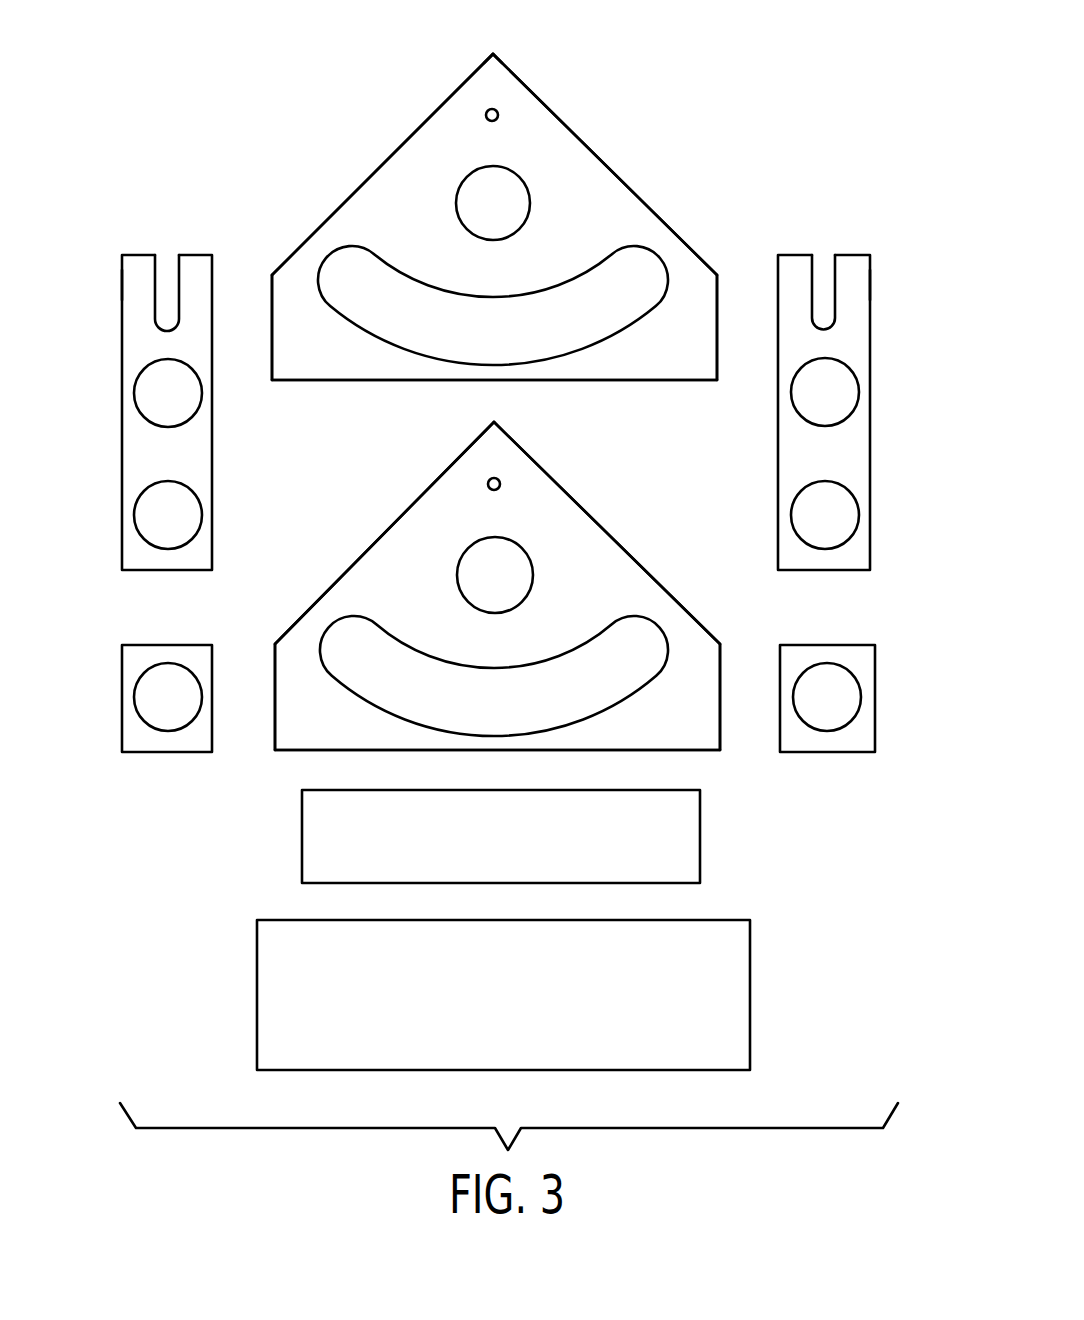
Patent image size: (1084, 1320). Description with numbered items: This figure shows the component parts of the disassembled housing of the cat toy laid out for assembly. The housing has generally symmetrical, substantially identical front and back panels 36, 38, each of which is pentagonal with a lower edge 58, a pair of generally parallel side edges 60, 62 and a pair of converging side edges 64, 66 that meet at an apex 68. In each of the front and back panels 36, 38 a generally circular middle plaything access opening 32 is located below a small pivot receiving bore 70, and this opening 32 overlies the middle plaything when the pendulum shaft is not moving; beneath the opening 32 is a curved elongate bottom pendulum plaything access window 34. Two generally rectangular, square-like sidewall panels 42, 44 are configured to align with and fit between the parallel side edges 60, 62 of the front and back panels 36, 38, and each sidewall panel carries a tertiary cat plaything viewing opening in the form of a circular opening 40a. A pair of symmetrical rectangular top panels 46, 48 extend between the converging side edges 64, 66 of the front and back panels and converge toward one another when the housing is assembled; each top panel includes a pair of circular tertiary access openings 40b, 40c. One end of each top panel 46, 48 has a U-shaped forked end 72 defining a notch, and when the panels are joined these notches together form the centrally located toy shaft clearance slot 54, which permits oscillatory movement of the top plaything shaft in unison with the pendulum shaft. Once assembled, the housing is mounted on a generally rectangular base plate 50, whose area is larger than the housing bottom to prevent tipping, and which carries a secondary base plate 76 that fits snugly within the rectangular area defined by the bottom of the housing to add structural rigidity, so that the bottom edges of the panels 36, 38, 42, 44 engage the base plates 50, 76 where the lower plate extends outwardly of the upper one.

The middle plaything access opening 32 is at (476, 220).
The curved elongate bottom pendulum plaything access window 34 is at (476, 342).
The front panel 36 is at (332, 232).
The back panel 38 is at (632, 586).
The tertiary cat plaything viewing opening 40a is at (146, 714).
The tertiary access opening 40b is at (146, 532).
The tertiary access opening 40c is at (146, 410).
The sidewall panel 42 is at (133, 676).
The sidewall panel 44 is at (867, 676).
The top panel 46 is at (135, 478).
The top panel 48 is at (855, 465).
The base plate 50 is at (750, 1003).
The toy shaft clearance slot 54 is at (165, 258).
The lower edge 58 is at (299, 384).
The side edge 60 is at (271, 328).
The side edge 62 is at (718, 340).
The converging side edge 64 is at (378, 166).
The converging side edge 66 is at (576, 127).
The apex 68 is at (496, 50).
The pivot receiving bore 70 is at (486, 113).
The U-shaped forked end 72 is at (134, 287).
The secondary base plate 76 is at (700, 843).